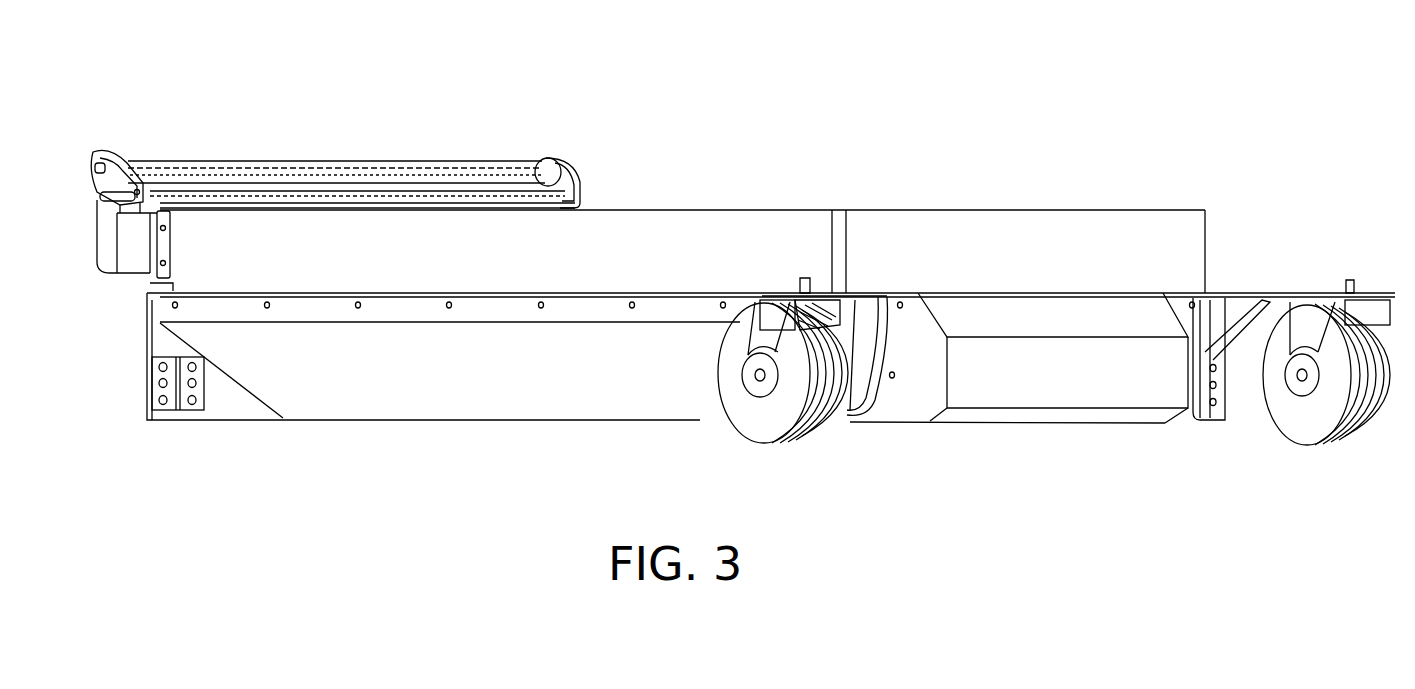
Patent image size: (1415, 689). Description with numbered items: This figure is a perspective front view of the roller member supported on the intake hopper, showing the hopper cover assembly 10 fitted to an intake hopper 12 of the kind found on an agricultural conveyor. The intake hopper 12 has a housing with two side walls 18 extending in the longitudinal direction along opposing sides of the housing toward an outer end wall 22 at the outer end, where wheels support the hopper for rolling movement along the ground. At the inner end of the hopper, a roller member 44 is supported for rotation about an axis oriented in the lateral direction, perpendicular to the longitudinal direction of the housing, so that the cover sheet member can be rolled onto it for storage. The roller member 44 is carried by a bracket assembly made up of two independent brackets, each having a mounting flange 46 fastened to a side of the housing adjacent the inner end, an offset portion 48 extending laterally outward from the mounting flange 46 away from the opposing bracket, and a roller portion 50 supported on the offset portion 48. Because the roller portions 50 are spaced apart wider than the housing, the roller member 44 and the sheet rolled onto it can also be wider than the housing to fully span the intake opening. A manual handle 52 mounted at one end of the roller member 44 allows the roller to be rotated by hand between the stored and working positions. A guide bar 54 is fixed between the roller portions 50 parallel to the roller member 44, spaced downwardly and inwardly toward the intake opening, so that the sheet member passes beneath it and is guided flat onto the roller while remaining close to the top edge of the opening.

The hopper cover assembly 10 is at (378, 143).
The intake hopper 12 is at (995, 143).
The side walls 18 is at (727, 217).
The outer end wall 22 is at (1088, 220).
The roller member 44 is at (478, 162).
The mounting flange 46 is at (170, 253).
The offset portion 48 is at (138, 262).
The roller portion 50 is at (574, 178).
The manual handle 52 is at (130, 148).
The guide bar 54 is at (311, 192).